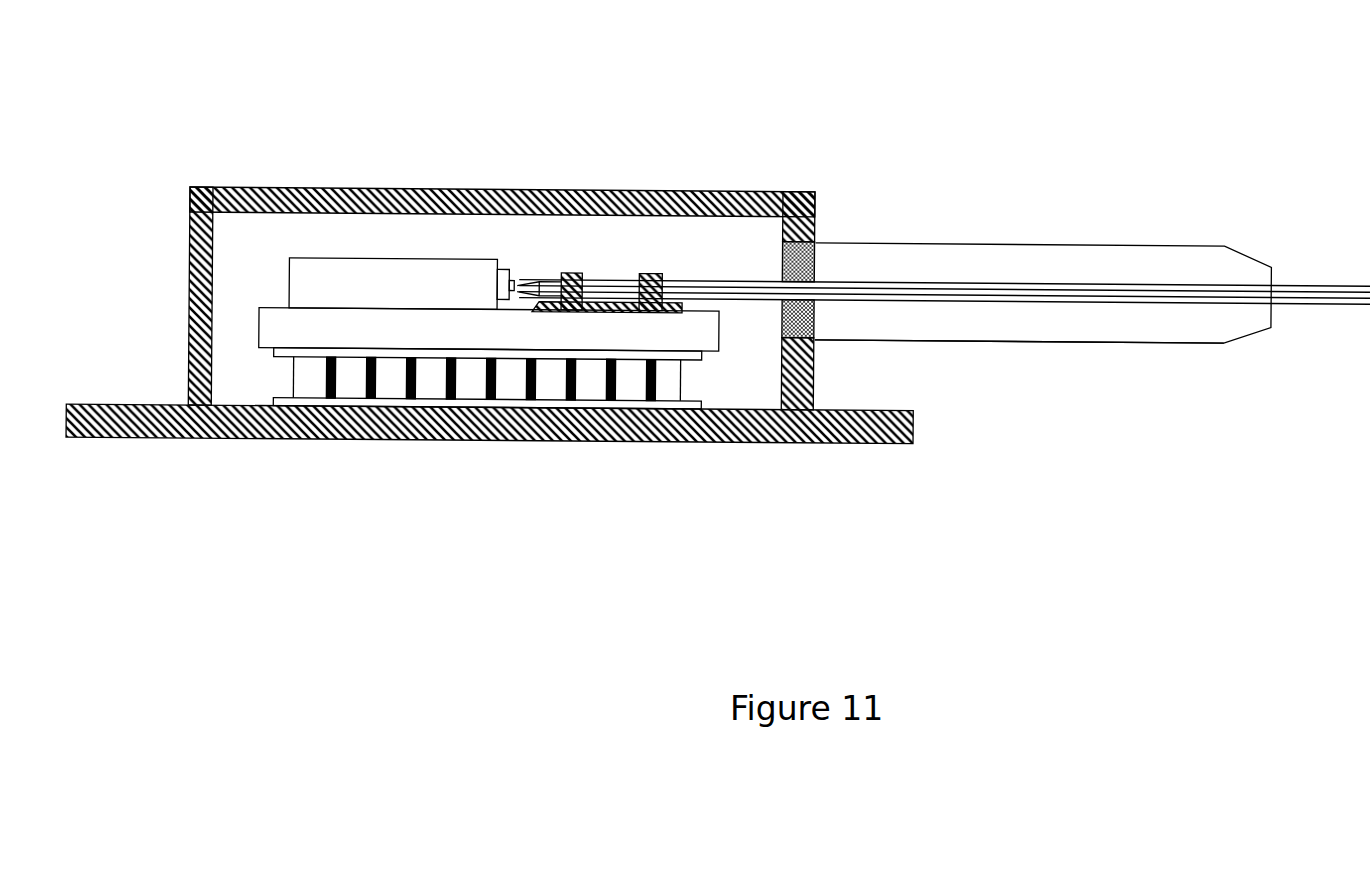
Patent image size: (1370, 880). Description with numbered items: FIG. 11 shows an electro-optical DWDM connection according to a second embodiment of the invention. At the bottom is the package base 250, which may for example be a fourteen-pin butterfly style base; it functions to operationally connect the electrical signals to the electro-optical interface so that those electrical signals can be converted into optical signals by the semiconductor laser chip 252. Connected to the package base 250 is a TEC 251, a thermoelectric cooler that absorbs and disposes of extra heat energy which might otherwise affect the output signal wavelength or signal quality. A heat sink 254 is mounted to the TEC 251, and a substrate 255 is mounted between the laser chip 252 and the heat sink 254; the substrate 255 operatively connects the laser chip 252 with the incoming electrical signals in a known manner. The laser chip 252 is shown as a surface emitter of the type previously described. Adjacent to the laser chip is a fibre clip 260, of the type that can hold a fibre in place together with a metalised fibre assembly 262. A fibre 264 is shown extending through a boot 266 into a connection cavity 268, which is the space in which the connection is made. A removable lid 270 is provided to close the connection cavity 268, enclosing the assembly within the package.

The package base 250 is at (915, 424).
The TEC (thermoelectric cooler) 251 is at (316, 378).
The semiconductor laser chip 252 is at (533, 280).
The heat sink 254 is at (380, 272).
The substrate 255 is at (505, 264).
The fibre clip 260 is at (653, 268).
The metalised fibre assembly 262 is at (847, 252).
The fibre 264 is at (537, 368).
The boot 266 is at (847, 318).
The connection cavity 268 is at (738, 386).
The removable lid 270 is at (295, 187).